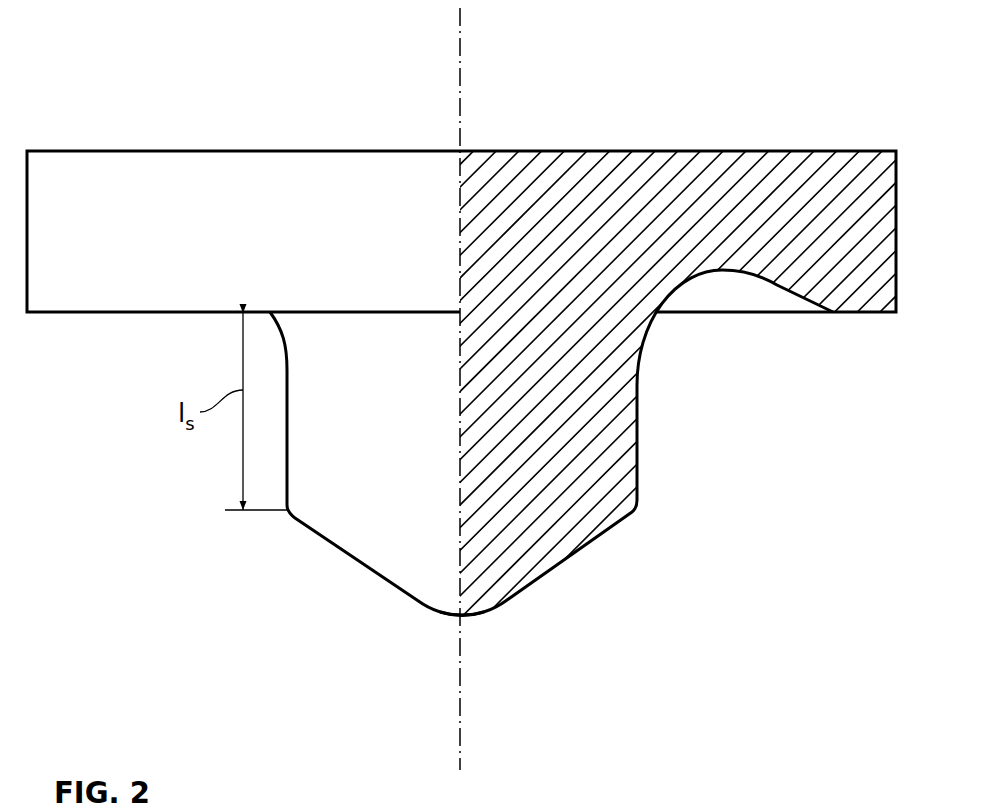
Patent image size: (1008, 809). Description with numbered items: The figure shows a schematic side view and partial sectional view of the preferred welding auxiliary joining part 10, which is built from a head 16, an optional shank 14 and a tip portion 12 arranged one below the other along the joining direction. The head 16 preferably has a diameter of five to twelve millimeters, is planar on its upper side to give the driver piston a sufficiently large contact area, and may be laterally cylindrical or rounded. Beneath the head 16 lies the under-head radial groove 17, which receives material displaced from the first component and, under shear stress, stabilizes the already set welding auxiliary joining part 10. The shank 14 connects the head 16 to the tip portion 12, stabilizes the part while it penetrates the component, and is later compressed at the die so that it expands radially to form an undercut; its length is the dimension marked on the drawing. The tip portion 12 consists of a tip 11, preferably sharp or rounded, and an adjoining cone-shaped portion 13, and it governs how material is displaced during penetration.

The welding auxiliary joining part 10 is at (602, 64).
The tip 11 is at (462, 616).
The tip portion 12 is at (411, 609).
The cone-shaped portion 13 is at (513, 596).
The shank 14 is at (637, 417).
The head 16 is at (253, 151).
The under-head radial groove 17 is at (717, 270).